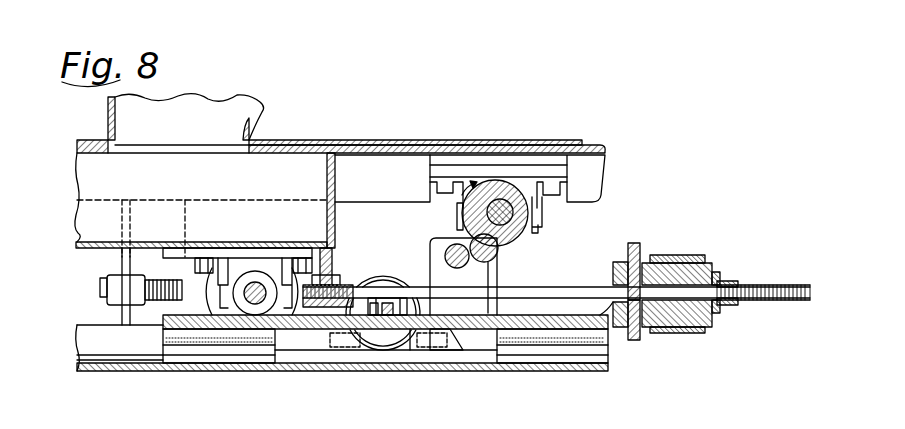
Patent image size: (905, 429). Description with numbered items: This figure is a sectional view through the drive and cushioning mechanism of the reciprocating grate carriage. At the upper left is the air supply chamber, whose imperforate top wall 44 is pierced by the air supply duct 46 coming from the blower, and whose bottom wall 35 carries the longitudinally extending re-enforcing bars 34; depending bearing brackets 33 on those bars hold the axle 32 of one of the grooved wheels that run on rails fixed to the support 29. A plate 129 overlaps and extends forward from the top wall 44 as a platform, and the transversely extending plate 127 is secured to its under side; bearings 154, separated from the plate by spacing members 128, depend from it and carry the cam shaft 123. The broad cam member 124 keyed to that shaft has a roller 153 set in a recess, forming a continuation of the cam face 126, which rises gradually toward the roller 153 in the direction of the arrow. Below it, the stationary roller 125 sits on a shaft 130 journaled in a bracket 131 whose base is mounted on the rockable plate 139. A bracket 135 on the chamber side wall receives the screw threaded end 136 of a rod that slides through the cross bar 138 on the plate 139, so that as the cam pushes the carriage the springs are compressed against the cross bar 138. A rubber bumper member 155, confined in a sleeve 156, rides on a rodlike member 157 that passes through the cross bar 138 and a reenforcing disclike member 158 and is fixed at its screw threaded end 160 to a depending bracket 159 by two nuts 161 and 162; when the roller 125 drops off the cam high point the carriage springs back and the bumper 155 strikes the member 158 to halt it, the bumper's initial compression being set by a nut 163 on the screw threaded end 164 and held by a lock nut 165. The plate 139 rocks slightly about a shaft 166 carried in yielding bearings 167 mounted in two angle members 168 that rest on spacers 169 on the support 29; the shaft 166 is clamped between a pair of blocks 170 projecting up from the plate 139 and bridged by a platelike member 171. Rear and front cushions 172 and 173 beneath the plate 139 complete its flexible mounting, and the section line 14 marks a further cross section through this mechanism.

The section line 14- 14 is at (393, 140).
The support 29 is at (210, 371).
The axle 32 is at (257, 291).
The bearing bracket 33 is at (223, 268).
The re-enforcing bar 34 is at (256, 252).
The bottom wall 35 is at (191, 205).
The top wall 44 is at (90, 153).
The air supply duct 46 is at (107, 117).
The cam shaft 123 is at (511, 229).
The cam member 124 is at (548, 195).
The roller 125 is at (452, 247).
The cam face 126 is at (500, 181).
The transversely extending plate 127 is at (603, 145).
The spacing member 128 is at (430, 168).
The plate 129 is at (580, 141).
The shaft 130 is at (485, 280).
The bracket 131 is at (484, 304).
The bracket 135 is at (122, 258).
The screw threaded end 136 is at (100, 288).
The cross bar 138 is at (629, 243).
The rockable plate 139 is at (532, 329).
The roller 153 is at (498, 259).
The bearing 154 is at (541, 224).
The rubber bumper member 155 is at (691, 264).
The sleeve 156 is at (674, 257).
The rodlike member 157 is at (677, 328).
The reenforcing disclike member 158 is at (634, 341).
The depending bracket 159 is at (333, 256).
The screw threaded end 160 is at (371, 306).
The nut 161 is at (385, 333).
The nut 162 is at (352, 284).
The nut 163 is at (720, 305).
The screw threaded end 164 is at (762, 287).
The lock nut 165 is at (733, 303).
The shaft 166 is at (394, 278).
The bearing 167 is at (387, 297).
The angle member 168 is at (441, 348).
The spacer 169 is at (306, 357).
The block 170 is at (400, 316).
The platelike member 171 is at (381, 297).
The cushion 172 is at (187, 343).
The cushion 173 is at (574, 348).